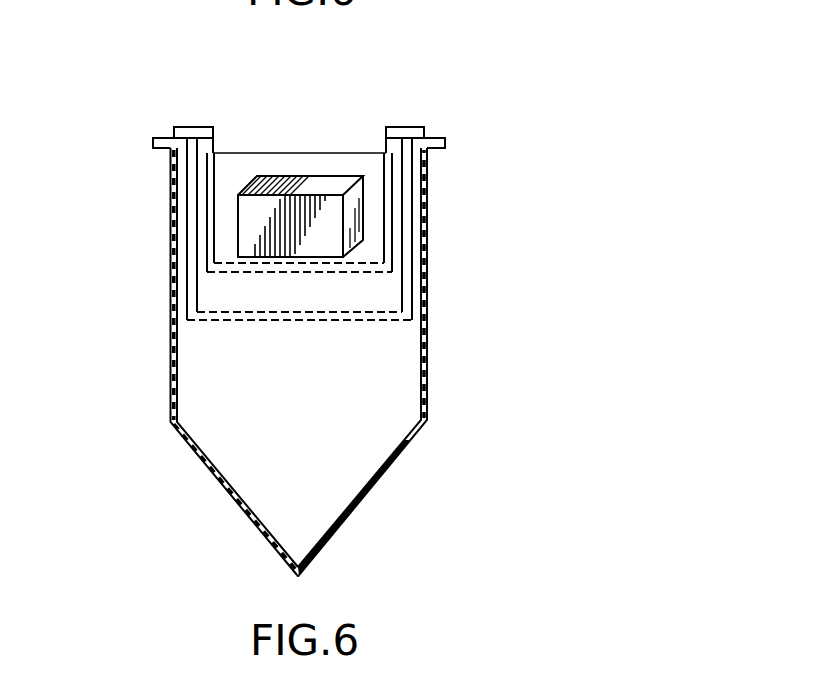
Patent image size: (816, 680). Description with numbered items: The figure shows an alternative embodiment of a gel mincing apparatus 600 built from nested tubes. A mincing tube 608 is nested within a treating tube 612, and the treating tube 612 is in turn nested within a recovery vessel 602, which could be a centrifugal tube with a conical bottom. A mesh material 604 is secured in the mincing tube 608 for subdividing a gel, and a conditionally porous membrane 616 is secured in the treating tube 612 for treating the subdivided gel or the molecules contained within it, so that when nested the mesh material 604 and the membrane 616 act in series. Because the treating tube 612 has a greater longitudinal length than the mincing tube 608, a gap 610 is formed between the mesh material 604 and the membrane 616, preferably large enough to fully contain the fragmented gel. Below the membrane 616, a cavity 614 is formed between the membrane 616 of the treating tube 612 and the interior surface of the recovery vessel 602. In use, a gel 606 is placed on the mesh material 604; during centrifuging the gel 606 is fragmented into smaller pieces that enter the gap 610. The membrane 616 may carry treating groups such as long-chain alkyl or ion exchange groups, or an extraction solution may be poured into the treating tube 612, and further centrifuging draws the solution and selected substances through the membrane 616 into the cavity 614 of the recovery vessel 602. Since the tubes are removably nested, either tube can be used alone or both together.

The gel mincing apparatus 600 is at (121, 87).
The recovery vessel 602 is at (367, 490).
The mesh material 604 is at (323, 272).
The gel 606 is at (322, 183).
The mincing tube 608 is at (222, 143).
The gap 610 is at (322, 304).
The treating tube 612 is at (187, 232).
The cavity 614 is at (322, 398).
The conditionally porous membrane 616 is at (232, 320).